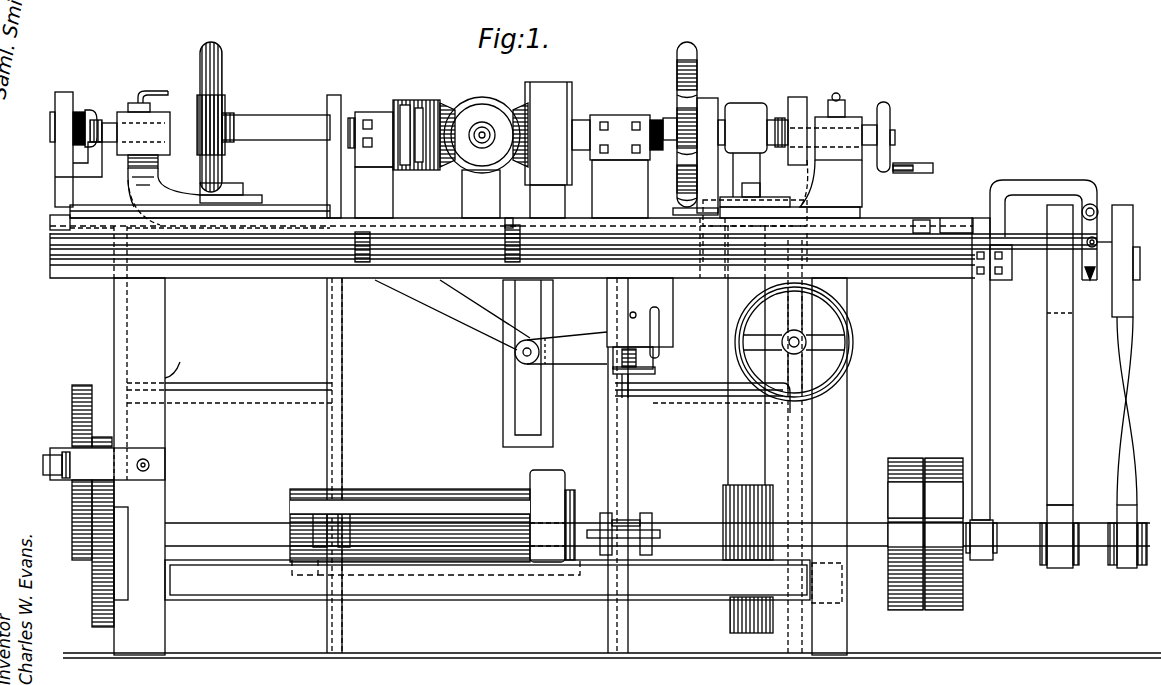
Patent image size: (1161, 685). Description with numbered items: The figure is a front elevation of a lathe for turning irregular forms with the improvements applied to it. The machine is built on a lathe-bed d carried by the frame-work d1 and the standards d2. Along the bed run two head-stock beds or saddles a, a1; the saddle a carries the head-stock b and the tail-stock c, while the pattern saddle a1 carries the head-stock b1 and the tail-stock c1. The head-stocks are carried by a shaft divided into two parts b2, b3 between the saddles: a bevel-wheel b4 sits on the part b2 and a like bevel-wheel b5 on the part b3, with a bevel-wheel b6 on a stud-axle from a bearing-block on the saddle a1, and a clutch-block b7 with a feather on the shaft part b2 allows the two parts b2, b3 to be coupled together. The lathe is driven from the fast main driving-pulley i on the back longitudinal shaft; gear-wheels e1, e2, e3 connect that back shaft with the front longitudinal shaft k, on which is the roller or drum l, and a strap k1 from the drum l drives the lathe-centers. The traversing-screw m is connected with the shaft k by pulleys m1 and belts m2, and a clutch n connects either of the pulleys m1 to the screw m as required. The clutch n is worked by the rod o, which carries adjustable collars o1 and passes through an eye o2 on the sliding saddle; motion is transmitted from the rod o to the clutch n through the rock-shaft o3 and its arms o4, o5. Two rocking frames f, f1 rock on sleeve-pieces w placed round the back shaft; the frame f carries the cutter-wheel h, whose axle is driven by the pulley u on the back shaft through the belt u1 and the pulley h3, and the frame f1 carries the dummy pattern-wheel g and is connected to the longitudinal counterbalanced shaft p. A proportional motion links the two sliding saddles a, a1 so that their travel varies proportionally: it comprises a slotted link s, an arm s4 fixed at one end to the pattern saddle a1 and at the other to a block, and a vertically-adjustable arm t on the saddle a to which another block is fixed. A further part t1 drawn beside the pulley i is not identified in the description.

The head-stock bed or saddle a is at (512, 239).
The pattern bed or saddle a1 is at (263, 221).
The head-stock b is at (633, 166).
The head-stock b1 is at (374, 192).
The shaft part b2 is at (352, 118).
The shaft part b3 is at (572, 112).
The bevel-wheel b4 is at (456, 123).
The bevel-wheel b5 is at (600, 112).
The bevel-wheel b6 is at (482, 157).
The clutch-block b7 is at (430, 112).
The tail-stock c is at (860, 150).
The tail-stock c1 is at (125, 158).
The lathe-bed d is at (573, 252).
The frame-work d1 is at (503, 581).
The standards d2 is at (480, 466).
The gear-wheel e1 is at (72, 550).
The gear-wheel e2 is at (88, 421).
The gear-wheel e3 is at (95, 598).
The rocking frame f is at (622, 436).
The rocking frame f1 is at (121, 354).
The dummy pattern-wheel g is at (269, 130).
The cutter-wheel h is at (695, 128).
The pulley h3 is at (770, 108).
The fast main driving-pulley i is at (905, 534).
The front longitudinal shaft k is at (1089, 543).
The strap k1 is at (550, 322).
The roller or drum l is at (410, 515).
The traversing-screw m is at (1132, 408).
The pulleys m1 is at (1068, 299).
The belts m2 is at (1068, 528).
The clutch n is at (1105, 246).
The rod o is at (957, 250).
The adjustable collars o1 is at (450, 241).
The eye o2 is at (512, 215).
The rock-shaft o3 is at (1097, 206).
The arm o4 is at (1083, 232).
The arm o5 is at (1078, 259).
The longitudinal counterbalanced shaft p is at (755, 242).
The slotted link s is at (545, 391).
The arm s4 is at (452, 315).
The vertically-adjustable arm t is at (652, 345).
The gear t1 is at (943, 534).
The pulley u is at (735, 429).
The belt u1 is at (794, 439).
The sleeve-pieces w is at (318, 513).